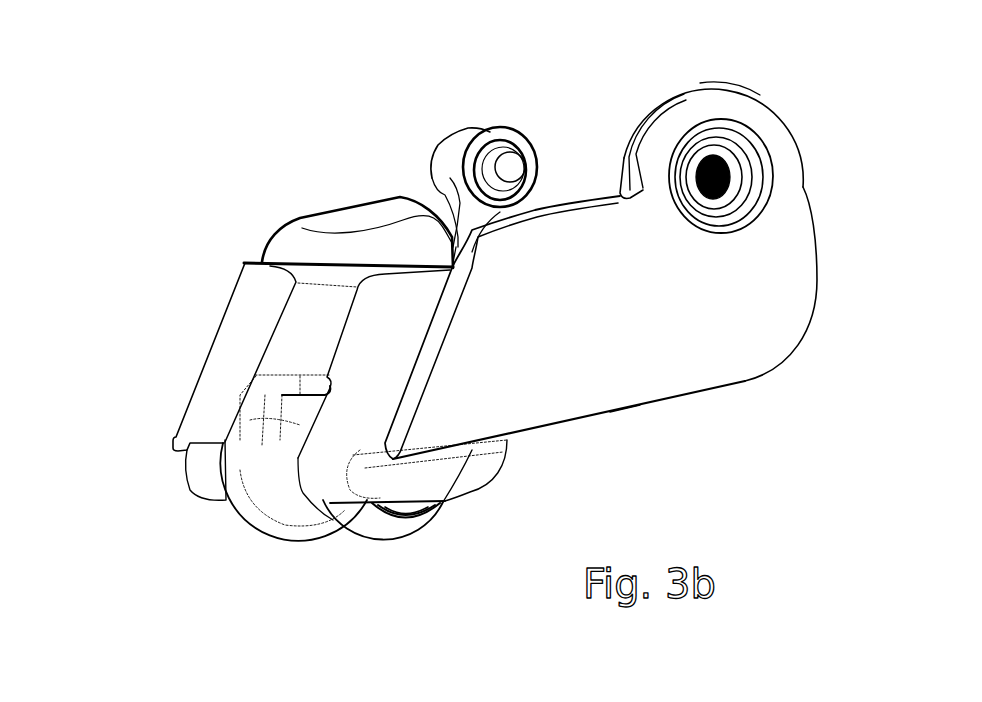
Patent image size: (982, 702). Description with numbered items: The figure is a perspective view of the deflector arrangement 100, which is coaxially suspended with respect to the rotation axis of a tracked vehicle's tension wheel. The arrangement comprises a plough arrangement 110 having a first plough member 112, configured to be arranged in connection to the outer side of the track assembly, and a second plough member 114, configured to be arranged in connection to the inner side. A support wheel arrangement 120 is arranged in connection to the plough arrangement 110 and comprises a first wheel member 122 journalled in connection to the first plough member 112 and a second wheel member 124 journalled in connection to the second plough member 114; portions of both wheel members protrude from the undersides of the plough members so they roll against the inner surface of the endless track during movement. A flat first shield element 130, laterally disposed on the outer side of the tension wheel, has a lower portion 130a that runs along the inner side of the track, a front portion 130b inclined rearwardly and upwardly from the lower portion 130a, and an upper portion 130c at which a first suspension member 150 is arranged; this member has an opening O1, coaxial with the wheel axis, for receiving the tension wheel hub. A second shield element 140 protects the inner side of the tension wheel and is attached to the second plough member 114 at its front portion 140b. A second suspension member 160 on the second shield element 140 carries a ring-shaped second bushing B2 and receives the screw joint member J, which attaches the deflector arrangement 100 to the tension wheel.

The deflector arrangement 100 is at (305, 123).
The plough arrangement 110 is at (290, 338).
The first plough member 112 is at (337, 438).
The second plough member 114 is at (213, 392).
The support wheel arrangement 120 is at (380, 540).
The first wheel member 122 is at (263, 538).
The second wheel member 124 is at (400, 540).
The first shield element 130 is at (675, 342).
The lower portion of the first shield element 130a is at (687, 393).
The front portion of the first shield element 130b is at (300, 228).
The upper portion of the first shield element 130c is at (738, 83).
The second shield element 140 is at (353, 198).
The front portion of the second shield element 140b is at (263, 253).
The first suspension member 150 is at (672, 88).
The second suspension member 160 is at (467, 127).
The screw joint member J is at (507, 150).
The second bushing B2 is at (522, 190).
The opening O1 is at (742, 165).